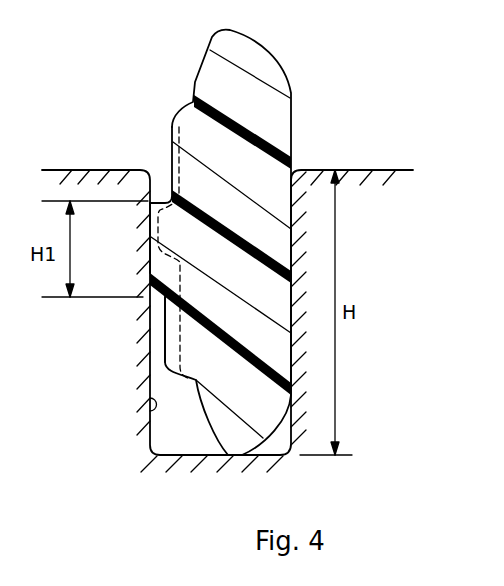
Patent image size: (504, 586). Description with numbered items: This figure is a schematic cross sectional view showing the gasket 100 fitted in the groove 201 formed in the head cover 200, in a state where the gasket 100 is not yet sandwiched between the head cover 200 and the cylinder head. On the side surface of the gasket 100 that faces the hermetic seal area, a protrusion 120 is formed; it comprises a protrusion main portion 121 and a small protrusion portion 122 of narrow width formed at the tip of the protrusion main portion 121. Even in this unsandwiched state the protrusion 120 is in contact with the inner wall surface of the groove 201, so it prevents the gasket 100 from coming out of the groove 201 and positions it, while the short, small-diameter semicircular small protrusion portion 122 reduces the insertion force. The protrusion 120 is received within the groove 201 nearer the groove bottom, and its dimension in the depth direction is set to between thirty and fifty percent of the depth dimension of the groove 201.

The gasket 100 is at (308, 64).
The protrusion 120 is at (162, 201).
The protrusion main portion 121 is at (165, 343).
The small protrusion portion 122 is at (150, 272).
The head cover 200 is at (353, 168).
The groove 201 is at (146, 410).